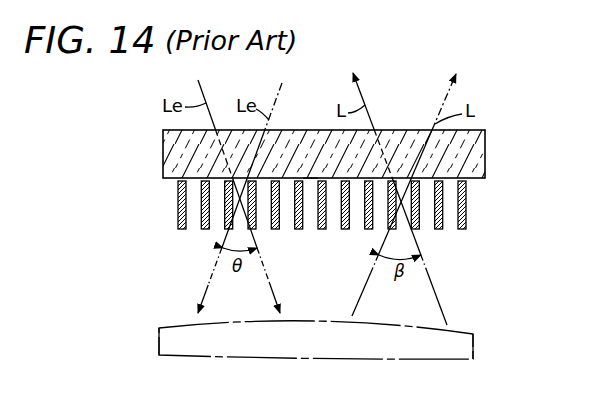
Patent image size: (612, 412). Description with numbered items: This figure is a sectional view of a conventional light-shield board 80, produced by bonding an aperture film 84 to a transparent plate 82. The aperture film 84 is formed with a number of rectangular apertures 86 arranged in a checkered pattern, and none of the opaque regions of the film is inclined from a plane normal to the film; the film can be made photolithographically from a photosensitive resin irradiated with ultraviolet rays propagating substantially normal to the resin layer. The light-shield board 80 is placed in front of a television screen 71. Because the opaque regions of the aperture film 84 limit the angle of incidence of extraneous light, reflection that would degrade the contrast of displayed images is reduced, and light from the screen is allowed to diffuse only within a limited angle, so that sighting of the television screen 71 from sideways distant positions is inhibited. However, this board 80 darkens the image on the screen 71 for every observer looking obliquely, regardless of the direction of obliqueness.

The light-shield board 80 is at (311, 203).
The transparent plate 82 is at (485, 147).
The aperture film 84 is at (466, 203).
The rectangular apertures 86 is at (312, 210).
The television screen 71 is at (180, 332).